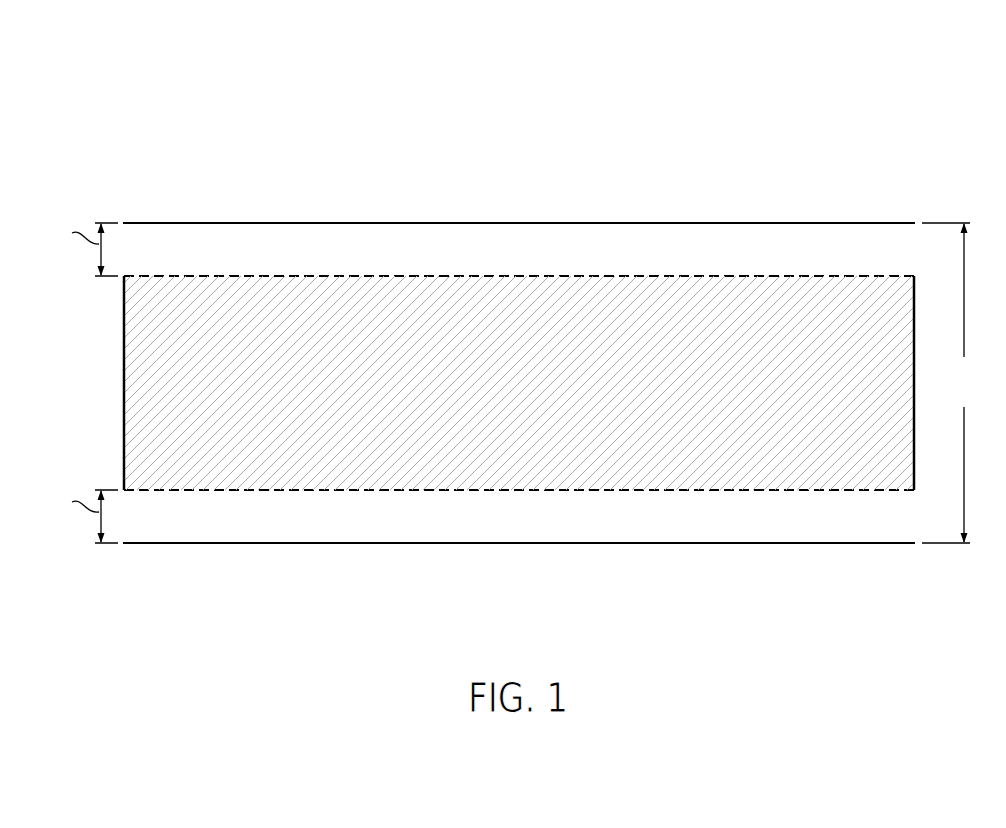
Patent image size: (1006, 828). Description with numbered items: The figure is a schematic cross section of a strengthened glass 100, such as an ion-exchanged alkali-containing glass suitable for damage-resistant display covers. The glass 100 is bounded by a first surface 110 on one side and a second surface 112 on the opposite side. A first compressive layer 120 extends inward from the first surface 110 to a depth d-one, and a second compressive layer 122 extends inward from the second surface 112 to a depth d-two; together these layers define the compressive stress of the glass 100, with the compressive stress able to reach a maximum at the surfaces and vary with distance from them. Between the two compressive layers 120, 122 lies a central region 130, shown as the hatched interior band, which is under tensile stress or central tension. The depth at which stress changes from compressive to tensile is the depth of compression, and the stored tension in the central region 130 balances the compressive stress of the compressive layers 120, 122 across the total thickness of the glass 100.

The glass 100 is at (870, 117).
The first surface 110 is at (750, 222).
The second surface 112 is at (752, 544).
The first compressive layer 120 is at (222, 237).
The second compressive layer 122 is at (223, 528).
The central region 130 is at (145, 378).